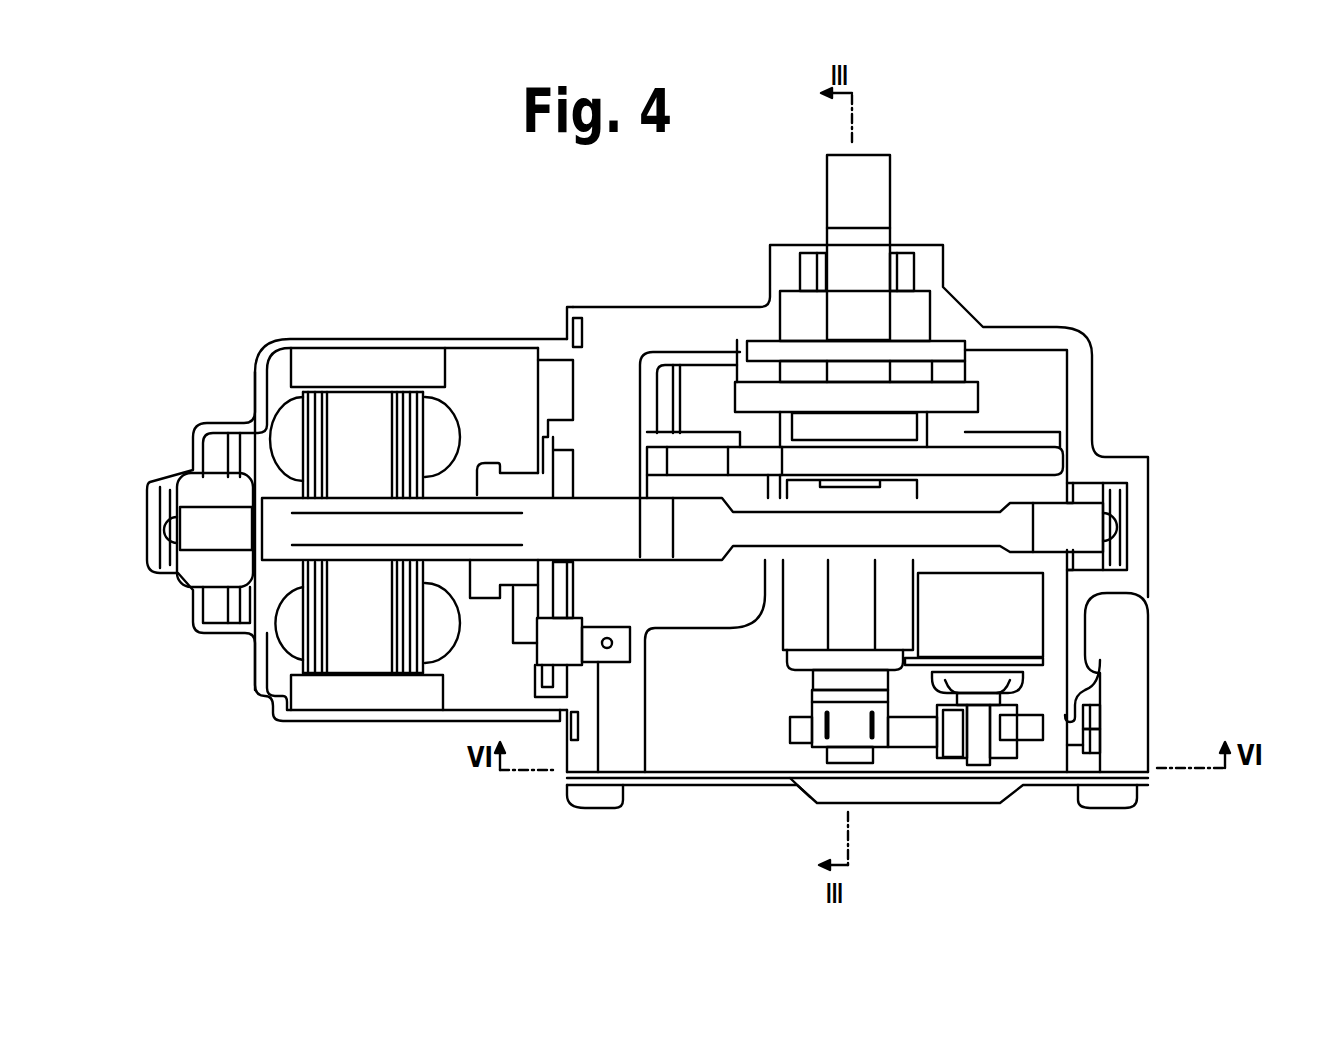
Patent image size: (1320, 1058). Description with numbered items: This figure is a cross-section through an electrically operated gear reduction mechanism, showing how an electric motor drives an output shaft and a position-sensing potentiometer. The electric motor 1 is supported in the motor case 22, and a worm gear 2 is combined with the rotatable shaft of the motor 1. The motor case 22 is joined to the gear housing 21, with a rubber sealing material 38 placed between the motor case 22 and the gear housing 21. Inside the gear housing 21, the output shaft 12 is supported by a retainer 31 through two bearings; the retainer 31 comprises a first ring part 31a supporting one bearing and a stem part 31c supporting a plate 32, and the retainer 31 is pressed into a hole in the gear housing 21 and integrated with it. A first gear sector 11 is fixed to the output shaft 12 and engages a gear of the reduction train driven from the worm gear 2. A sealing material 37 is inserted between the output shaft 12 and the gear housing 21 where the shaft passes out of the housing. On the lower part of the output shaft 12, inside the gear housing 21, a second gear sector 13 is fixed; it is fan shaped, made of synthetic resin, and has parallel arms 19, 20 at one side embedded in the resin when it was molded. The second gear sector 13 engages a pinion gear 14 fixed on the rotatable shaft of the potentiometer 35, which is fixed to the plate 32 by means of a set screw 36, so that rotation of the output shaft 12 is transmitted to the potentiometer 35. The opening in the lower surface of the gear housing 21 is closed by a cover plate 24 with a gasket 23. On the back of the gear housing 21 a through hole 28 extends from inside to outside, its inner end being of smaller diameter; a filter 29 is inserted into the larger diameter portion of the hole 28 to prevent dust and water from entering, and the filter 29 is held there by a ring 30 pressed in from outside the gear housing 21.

The electric motor 1 is at (462, 380).
The worm gear 2 is at (705, 560).
The first gear sector 11 is at (980, 397).
The output shaft 12 is at (892, 172).
The second gear sector 13 is at (918, 738).
The pinion gear 14 is at (953, 750).
The parallel arm 19 is at (862, 733).
The parallel arm 20 is at (812, 737).
The gear housing 21 is at (677, 318).
The motor case 22 is at (362, 342).
The gasket 23 is at (727, 775).
The cover plate 24 is at (665, 783).
The through hole 28 is at (1100, 670).
The filter 29 is at (1100, 723).
The ring 30 is at (1100, 743).
The retainer 31 is at (975, 368).
The first ring part 31a is at (940, 348).
The stem part 31c is at (793, 627).
The plate 32 is at (787, 663).
The potentiometer 35 is at (1033, 605).
The set screw 36 is at (1032, 737).
The sealing material 37 is at (910, 268).
The rubber sealing material 38 is at (582, 318).